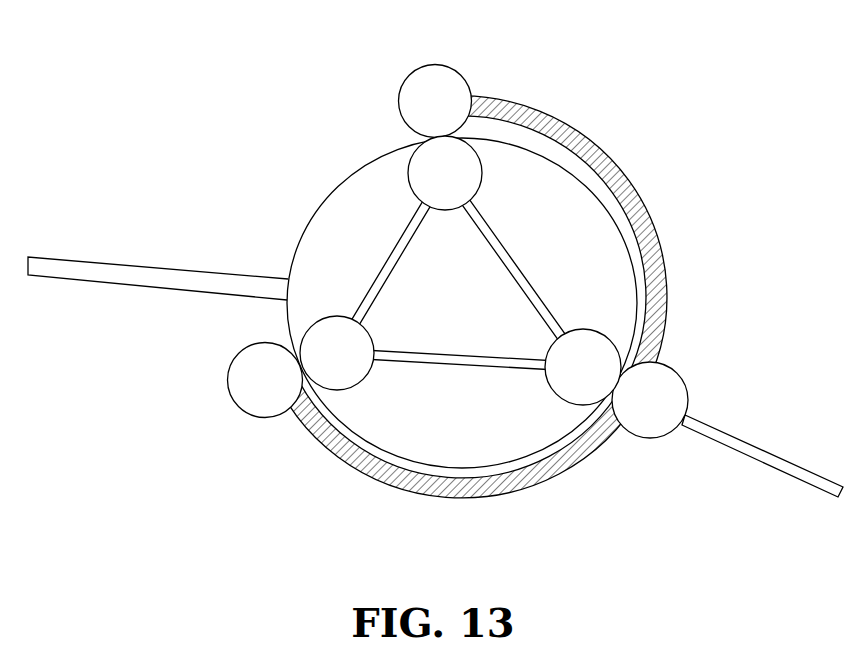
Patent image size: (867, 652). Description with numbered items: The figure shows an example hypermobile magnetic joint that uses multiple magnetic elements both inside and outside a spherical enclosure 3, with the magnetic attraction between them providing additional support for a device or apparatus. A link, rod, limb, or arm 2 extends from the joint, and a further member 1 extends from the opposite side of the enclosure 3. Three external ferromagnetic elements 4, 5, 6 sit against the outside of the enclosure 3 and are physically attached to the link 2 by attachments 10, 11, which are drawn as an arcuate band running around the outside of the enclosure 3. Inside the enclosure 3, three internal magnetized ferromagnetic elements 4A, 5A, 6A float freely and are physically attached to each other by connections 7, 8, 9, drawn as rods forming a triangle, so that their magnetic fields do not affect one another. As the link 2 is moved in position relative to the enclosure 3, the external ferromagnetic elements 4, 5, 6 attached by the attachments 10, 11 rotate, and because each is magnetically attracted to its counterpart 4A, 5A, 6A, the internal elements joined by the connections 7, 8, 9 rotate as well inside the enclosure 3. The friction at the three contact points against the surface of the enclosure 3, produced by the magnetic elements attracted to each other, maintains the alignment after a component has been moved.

The first arm 1 is at (105, 283).
The link, rod, limb, or arm 2 is at (740, 450).
The enclosure 3 is at (317, 207).
The ferromagnetic element 4 is at (228, 378).
The internal magnetized ferromagnetic element 4A is at (320, 347).
The ferromagnetic element 5 is at (467, 80).
The internal magnetized ferromagnetic element 5A is at (427, 167).
The ferromagnetic element 6 is at (678, 367).
The internal magnetized ferromagnetic element 6A is at (588, 360).
The physical attachment 7 is at (455, 363).
The physical attachment 8 is at (382, 265).
The physical attachment 9 is at (517, 253).
The physical attachment 10 is at (508, 492).
The physical attachment 11 is at (588, 145).